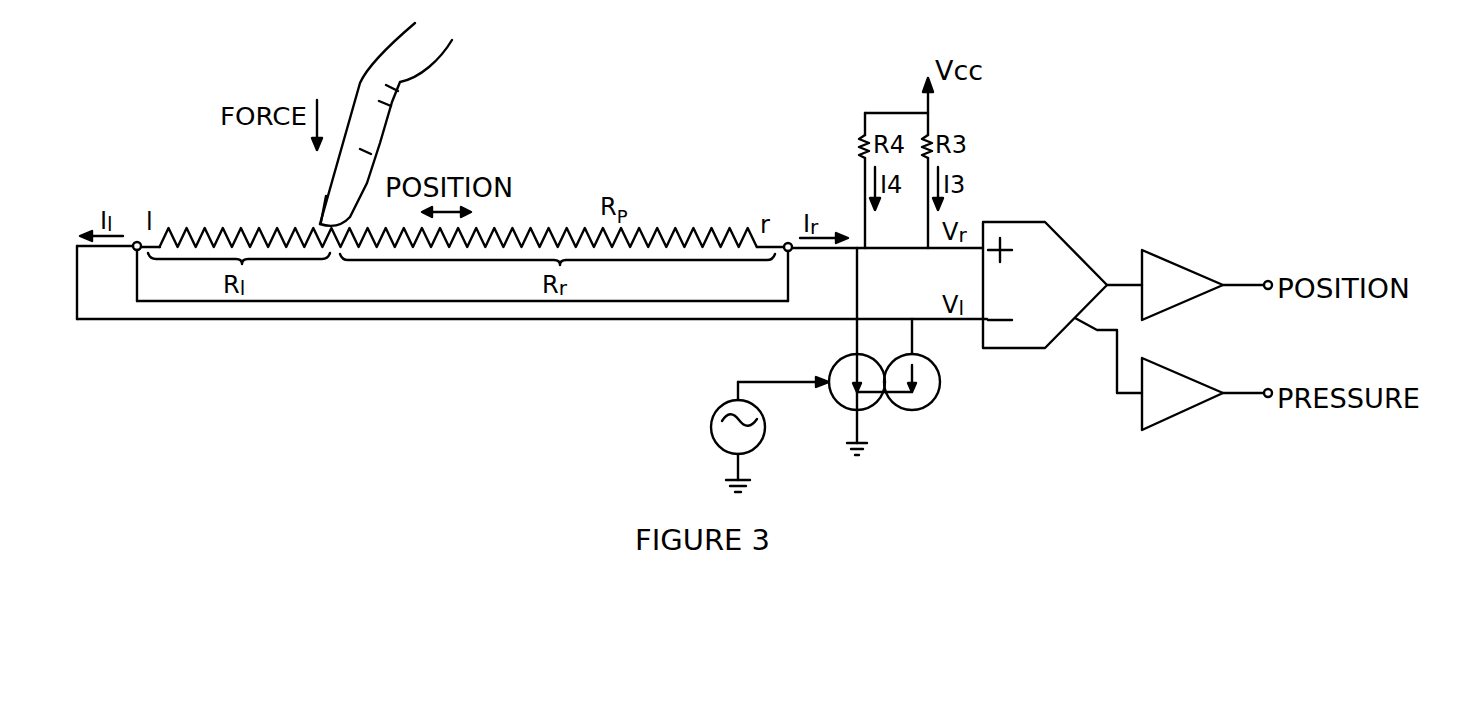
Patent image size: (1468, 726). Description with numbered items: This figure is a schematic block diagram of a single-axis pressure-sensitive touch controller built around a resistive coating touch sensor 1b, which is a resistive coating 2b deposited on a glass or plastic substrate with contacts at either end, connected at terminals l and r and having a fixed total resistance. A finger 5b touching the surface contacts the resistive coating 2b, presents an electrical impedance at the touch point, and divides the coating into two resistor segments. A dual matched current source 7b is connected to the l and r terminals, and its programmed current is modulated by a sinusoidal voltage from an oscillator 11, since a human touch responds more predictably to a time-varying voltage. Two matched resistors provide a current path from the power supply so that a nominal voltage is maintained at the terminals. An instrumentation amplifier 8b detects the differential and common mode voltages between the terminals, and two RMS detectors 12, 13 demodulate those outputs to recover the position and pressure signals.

The resistive coating touch sensor 1b is at (203, 301).
The resistive coating 2b is at (660, 230).
The finger 5b is at (392, 106).
The dual matched current source 7b is at (932, 400).
The instrumentation amplifier 8b is at (1063, 245).
The oscillator 11 is at (712, 438).
The RMS detector 12 is at (1167, 267).
The RMS detector 13 is at (1173, 375).